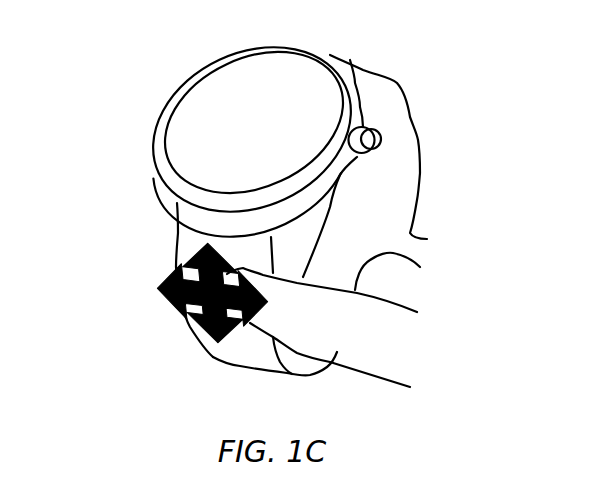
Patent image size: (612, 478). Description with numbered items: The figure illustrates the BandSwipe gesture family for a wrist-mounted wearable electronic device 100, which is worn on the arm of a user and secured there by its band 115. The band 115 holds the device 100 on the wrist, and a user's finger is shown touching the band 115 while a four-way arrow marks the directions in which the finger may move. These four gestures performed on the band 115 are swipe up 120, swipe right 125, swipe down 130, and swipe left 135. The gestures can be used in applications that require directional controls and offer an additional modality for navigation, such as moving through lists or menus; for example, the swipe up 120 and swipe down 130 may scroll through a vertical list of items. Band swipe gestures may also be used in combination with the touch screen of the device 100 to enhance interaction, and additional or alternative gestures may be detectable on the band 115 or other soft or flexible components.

The wearable electronic device 100 is at (205, 82).
The band 115 is at (425, 168).
The swipe up 120 is at (180, 250).
The swipe right 125 is at (267, 303).
The swipe down 130 is at (227, 352).
The swipe left 135 is at (150, 280).